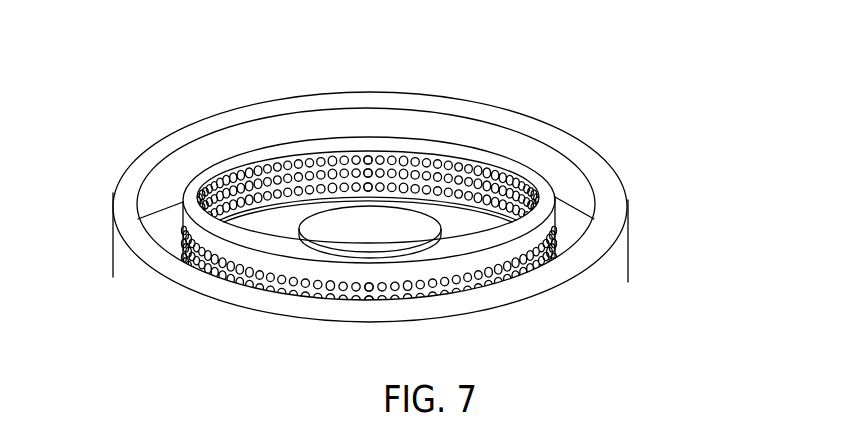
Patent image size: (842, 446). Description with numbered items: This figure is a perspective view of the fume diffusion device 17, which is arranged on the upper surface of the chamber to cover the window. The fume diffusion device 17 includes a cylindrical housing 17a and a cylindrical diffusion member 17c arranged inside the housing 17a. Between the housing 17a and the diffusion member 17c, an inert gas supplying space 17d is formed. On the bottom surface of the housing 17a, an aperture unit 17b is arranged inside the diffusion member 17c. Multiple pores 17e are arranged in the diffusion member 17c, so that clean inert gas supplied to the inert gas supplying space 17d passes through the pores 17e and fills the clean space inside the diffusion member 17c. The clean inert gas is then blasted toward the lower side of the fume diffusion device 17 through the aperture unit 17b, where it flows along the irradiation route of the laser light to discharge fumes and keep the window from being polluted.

The fume diffusion device 17 is at (603, 135).
The cylindrical housing 17a is at (605, 194).
The aperture unit 17b is at (391, 248).
The cylindrical diffusion member 17c is at (387, 141).
The inert gas supplying space 17d is at (573, 218).
The pores 17e is at (325, 154).